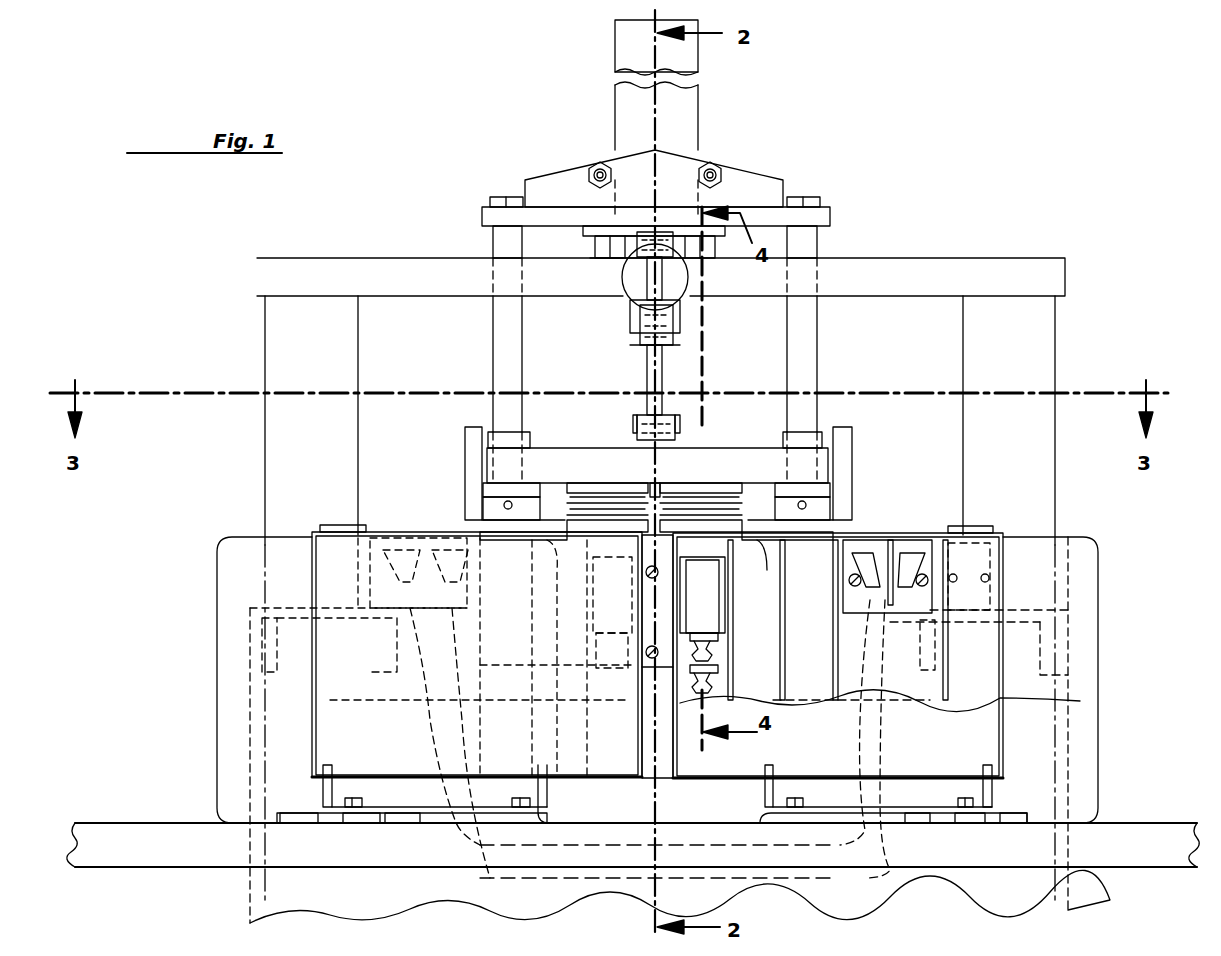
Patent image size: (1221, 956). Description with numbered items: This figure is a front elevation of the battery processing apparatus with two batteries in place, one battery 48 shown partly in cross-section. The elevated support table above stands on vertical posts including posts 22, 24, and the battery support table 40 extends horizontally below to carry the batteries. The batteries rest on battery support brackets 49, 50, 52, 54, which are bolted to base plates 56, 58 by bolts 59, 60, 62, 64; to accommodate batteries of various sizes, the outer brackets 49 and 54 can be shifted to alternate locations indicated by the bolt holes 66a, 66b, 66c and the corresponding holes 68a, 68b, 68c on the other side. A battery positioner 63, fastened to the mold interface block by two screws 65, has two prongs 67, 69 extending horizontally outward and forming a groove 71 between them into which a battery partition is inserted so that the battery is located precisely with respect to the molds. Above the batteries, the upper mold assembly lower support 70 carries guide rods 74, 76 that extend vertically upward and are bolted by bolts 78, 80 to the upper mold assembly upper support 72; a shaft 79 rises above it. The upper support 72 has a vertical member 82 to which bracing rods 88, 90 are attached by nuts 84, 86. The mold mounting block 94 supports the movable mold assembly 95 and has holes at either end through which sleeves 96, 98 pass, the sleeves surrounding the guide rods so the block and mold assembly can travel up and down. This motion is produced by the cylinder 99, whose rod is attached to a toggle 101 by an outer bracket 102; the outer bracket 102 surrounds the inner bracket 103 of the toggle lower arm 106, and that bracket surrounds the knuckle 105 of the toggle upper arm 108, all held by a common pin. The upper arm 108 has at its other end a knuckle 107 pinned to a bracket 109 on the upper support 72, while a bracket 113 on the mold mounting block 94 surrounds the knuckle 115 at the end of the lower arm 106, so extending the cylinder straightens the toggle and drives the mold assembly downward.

The vertical post 22 is at (293, 481).
The vertical post 24 is at (1040, 458).
The battery support table 40 is at (146, 835).
The battery 48 is at (312, 580).
The battery support bracket 49 is at (327, 790).
The battery support bracket 50 is at (545, 790).
The battery support bracket 52 is at (768, 790).
The battery support bracket 54 is at (1000, 793).
The base plate 56 is at (450, 743).
The base plate 58 is at (865, 739).
The bolt 59 is at (352, 801).
The bolt 60 is at (520, 801).
The bolt 62 is at (795, 803).
The battery positioner 63 is at (952, 552).
The bolt 64 is at (965, 805).
The screw 65 is at (920, 583).
The bolt hole 66a is at (305, 825).
The bolt hole 66b is at (347, 825).
The bolt hole 66c is at (382, 825).
The prong 67 is at (870, 540).
The connector 68a is at (910, 825).
The connector 68b is at (960, 825).
The connector 68c is at (1012, 825).
The prong 69 is at (918, 540).
The upper mold assembly lower support 70 is at (843, 476).
The groove 71 is at (891, 540).
The upper mold assembly upper support 72 is at (822, 213).
The guide rod 74 is at (508, 357).
The guide rod 76 is at (802, 363).
The bolt 78 is at (805, 197).
The shaft 79 is at (625, 105).
The bolt 80 is at (510, 198).
The vertical member 82 is at (745, 185).
The nut 84 is at (600, 163).
The nut 86 is at (712, 163).
The bracing rod 88 is at (593, 172).
The bracing rod 90 is at (718, 172).
The mold mounting block 94 is at (750, 458).
The movable mold assembly 95 is at (650, 471).
The sleeve 96 is at (510, 438).
The sleeve 98 is at (805, 440).
The cylinder 99 is at (633, 276).
The toggle 101 is at (620, 330).
The outer bracket 102 is at (680, 307).
The inner bracket 103 is at (670, 344).
The knuckle 105 is at (660, 327).
The toggle lower arm 106 is at (650, 382).
The knuckle 107 is at (644, 255).
The toggle upper arm 108 is at (653, 289).
The bracket 109 is at (640, 252).
The bracket 113 is at (673, 418).
The knuckle 115 is at (653, 418).